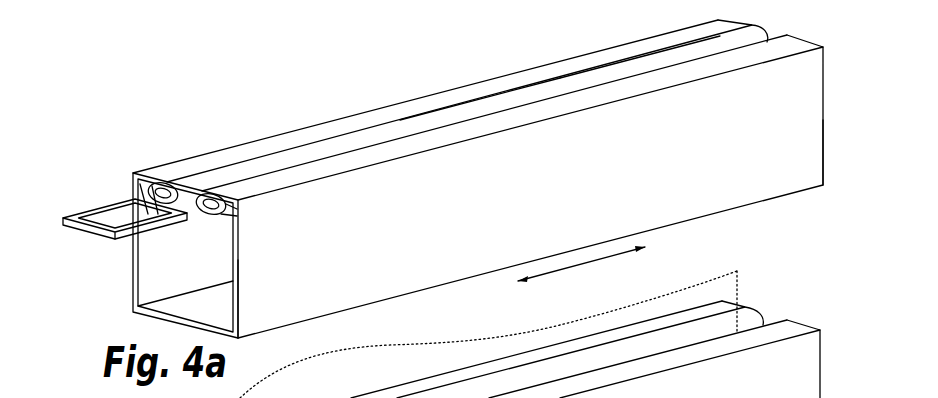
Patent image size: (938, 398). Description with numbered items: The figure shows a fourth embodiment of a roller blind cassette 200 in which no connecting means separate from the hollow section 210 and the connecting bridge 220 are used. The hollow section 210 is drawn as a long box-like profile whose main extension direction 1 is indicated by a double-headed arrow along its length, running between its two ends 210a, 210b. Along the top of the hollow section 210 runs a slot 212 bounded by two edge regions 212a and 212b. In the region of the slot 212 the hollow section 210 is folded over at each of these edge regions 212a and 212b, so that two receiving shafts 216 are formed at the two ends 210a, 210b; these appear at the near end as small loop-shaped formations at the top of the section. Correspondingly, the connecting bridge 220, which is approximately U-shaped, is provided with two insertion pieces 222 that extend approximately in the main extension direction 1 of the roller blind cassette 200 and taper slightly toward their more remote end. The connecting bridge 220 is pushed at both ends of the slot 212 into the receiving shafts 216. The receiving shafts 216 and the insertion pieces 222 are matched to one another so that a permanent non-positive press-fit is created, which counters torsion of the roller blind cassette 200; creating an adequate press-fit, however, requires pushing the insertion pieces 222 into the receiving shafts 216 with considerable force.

The roller blind cassette 200 is at (311, 104).
The hollow section 210 is at (410, 103).
The slot 212 is at (493, 112).
The edge region 212a is at (522, 86).
The edge region 212b is at (592, 91).
The receiving shaft 216 is at (207, 198).
The insertion piece 222 is at (137, 187).
The connecting bridge 220 is at (117, 228).
The main extension direction 1 is at (603, 250).
The end 210a is at (240, 296).
The end 210b is at (822, 158).